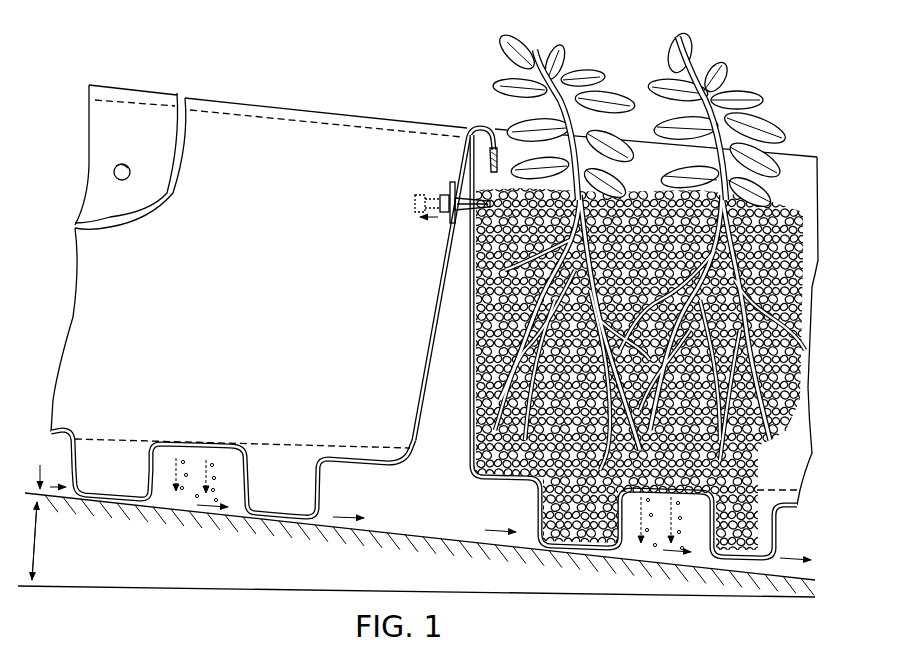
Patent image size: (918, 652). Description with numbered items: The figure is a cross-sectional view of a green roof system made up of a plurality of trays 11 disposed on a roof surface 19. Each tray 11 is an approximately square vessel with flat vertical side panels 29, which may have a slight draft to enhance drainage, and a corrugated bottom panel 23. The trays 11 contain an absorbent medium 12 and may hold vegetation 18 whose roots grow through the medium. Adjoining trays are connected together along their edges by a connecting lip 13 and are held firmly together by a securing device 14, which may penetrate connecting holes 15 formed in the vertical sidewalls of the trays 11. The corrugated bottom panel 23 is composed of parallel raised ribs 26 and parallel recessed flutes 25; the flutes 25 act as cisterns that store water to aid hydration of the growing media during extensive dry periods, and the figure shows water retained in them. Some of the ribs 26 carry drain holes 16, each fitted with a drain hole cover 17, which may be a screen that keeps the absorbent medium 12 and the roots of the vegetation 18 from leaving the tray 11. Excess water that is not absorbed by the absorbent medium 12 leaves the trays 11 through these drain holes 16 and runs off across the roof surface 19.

The tray 11 is at (303, 100).
The absorbent medium 12 is at (754, 450).
The connecting lip 13 is at (478, 122).
The securing device 14 is at (437, 190).
The connecting hole 15 is at (123, 166).
The drain hole 16 is at (190, 443).
The drain hole cover 17 is at (217, 441).
The vegetation 18 is at (768, 100).
The roof surface 19 is at (38, 512).
The corrugated bottom panel 23 is at (330, 448).
The recessed flute 25 is at (64, 432).
The raised rib 26 is at (108, 493).
The side panel 29 is at (441, 293).